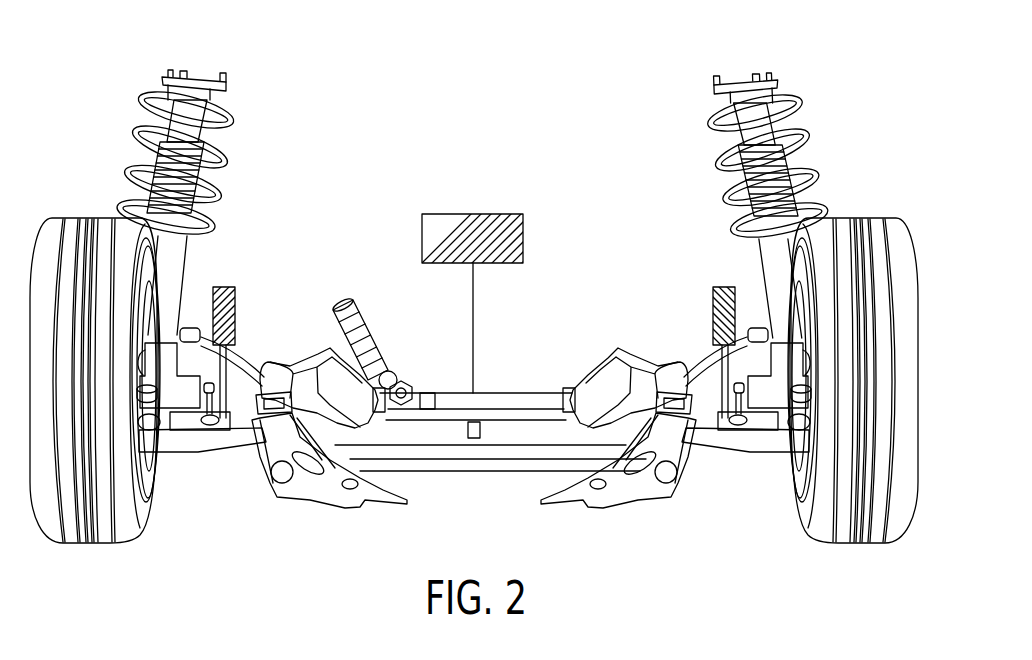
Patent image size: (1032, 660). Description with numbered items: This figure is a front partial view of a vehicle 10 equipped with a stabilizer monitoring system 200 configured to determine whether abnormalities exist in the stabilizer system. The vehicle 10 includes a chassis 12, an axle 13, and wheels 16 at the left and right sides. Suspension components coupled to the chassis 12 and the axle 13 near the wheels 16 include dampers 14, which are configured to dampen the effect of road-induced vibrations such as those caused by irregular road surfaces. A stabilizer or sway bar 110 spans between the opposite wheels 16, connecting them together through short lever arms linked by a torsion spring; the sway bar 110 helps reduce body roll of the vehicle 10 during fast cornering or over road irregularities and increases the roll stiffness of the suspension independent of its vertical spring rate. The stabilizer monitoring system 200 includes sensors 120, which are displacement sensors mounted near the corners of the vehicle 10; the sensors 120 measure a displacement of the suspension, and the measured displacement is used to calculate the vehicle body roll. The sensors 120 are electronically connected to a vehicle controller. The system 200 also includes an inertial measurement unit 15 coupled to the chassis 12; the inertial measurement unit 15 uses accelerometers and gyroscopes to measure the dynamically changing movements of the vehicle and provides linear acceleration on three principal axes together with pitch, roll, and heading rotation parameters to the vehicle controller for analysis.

The vehicle 10 is at (474, 308).
The stabilizer monitoring system 200 is at (474, 308).
The chassis 12 is at (474, 415).
The axle 13 is at (474, 464).
The damper 14 is at (473, 204).
The inertial measurement unit 15 is at (497, 273).
The wheel 16 is at (474, 404).
The sway bar 110 is at (490, 489).
The sensor 120 is at (474, 325).